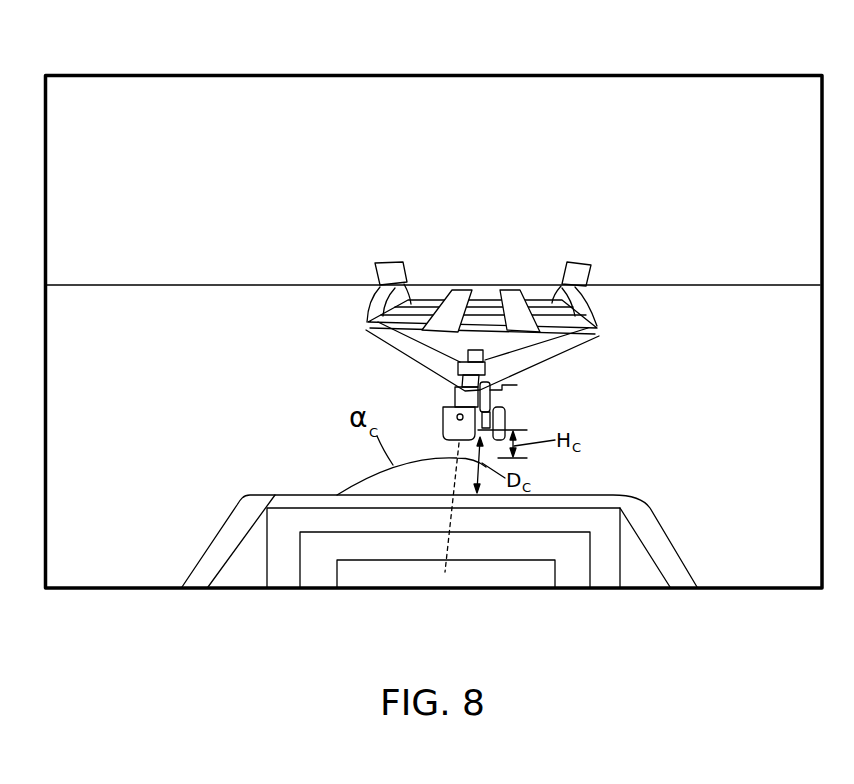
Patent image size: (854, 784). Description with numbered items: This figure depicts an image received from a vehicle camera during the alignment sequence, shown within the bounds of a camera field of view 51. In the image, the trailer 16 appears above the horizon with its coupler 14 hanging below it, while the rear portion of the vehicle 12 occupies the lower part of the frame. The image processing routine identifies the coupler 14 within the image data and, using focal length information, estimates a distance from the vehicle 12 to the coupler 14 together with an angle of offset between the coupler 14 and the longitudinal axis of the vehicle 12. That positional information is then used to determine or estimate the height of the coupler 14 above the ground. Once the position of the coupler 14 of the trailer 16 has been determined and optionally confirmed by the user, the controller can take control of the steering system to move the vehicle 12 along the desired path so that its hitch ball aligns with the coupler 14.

The field of view 51 is at (712, 73).
The trailer 16 is at (601, 262).
The coupler 14 is at (446, 413).
The vehicle 12 is at (705, 527).